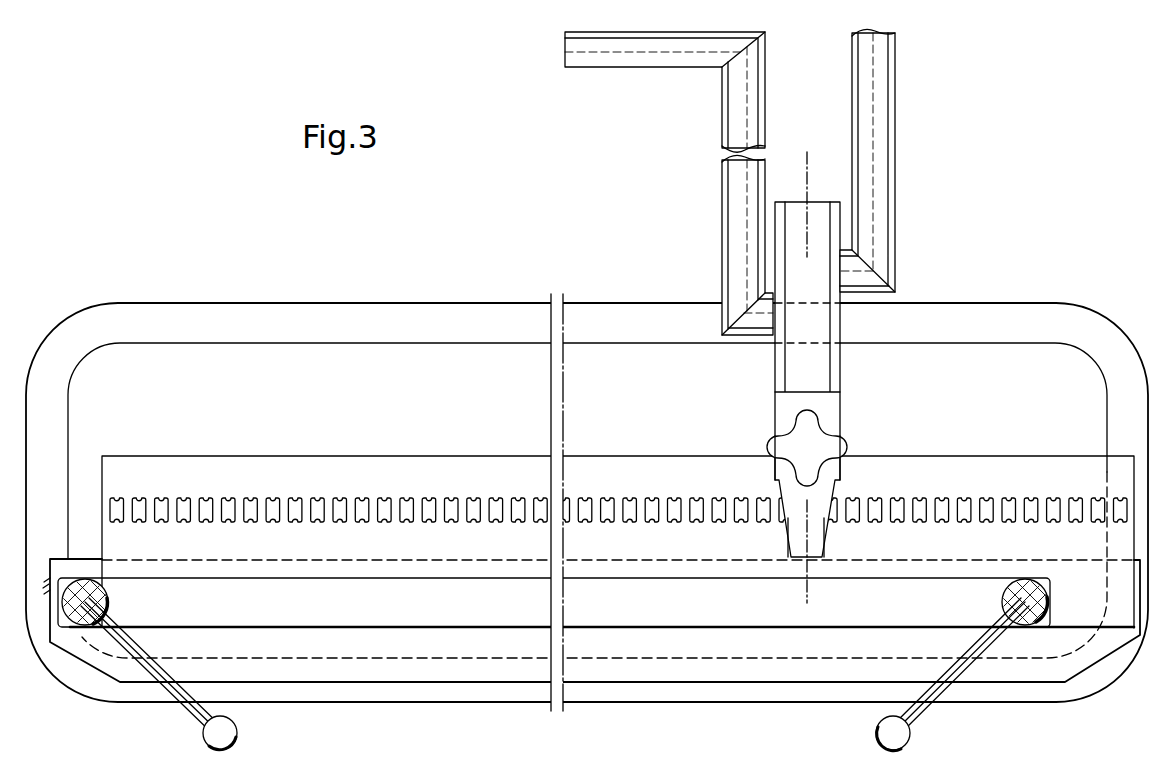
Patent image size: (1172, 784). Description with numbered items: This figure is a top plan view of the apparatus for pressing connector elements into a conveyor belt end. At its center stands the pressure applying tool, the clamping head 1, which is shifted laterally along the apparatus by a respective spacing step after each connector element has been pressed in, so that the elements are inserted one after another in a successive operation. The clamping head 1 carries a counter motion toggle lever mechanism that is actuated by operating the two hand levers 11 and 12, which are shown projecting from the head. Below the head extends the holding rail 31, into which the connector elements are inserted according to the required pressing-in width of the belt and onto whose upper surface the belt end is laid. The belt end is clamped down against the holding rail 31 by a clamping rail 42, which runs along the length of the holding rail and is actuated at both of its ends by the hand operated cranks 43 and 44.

The clamping head 1 is at (830, 418).
The hand lever 11 is at (725, 125).
The hand lever 12 is at (884, 124).
The holding rail 31 is at (345, 470).
The clamping rail 42 is at (375, 618).
The hand operated crank 43 is at (968, 653).
The hand operated crank 44 is at (135, 647).